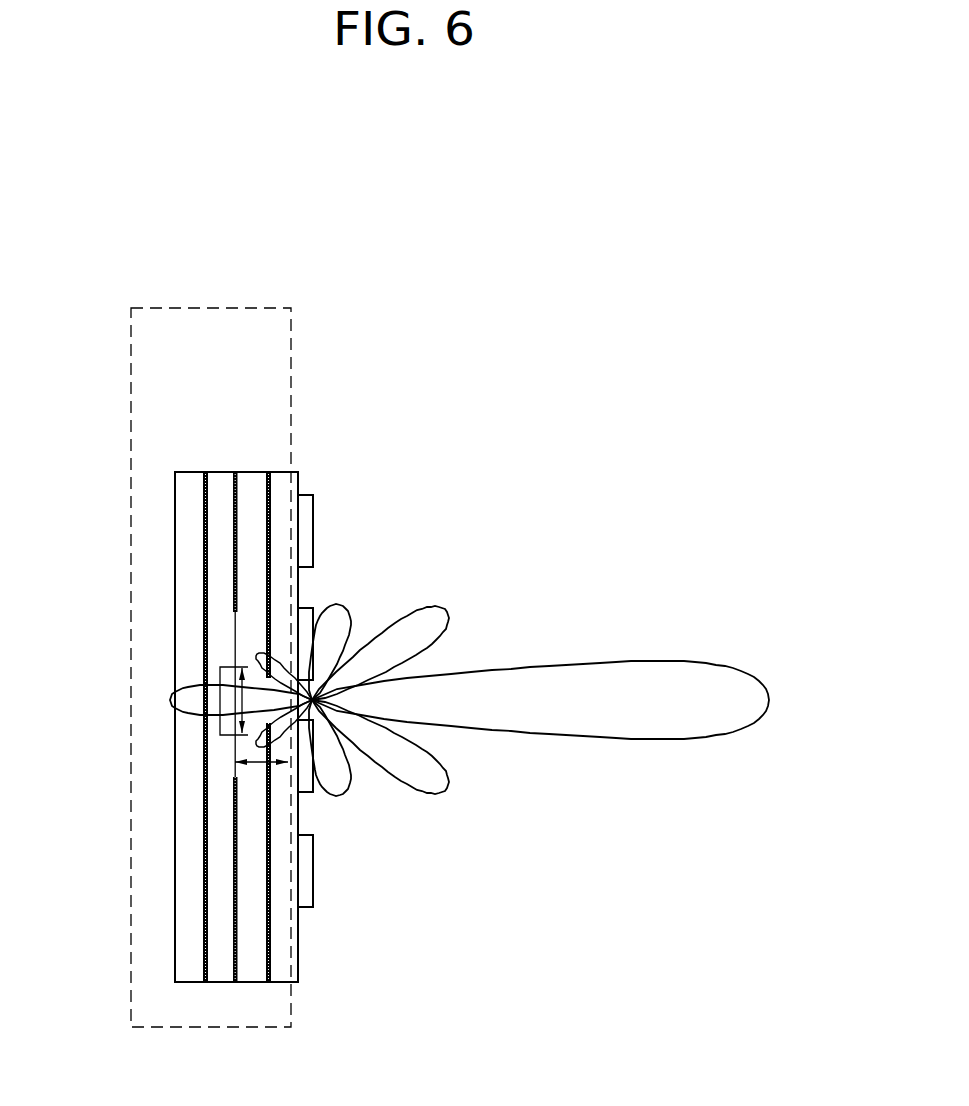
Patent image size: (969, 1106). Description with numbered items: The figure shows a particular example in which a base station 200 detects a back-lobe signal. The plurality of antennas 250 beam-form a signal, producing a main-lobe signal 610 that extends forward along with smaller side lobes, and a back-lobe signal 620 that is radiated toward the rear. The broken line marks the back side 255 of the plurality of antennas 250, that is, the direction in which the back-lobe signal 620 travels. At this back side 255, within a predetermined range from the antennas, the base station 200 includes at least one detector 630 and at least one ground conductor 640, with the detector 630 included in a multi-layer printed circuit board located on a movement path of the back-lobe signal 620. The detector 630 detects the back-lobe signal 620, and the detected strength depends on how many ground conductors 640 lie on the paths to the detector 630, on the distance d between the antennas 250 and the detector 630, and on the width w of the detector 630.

The base station 200 is at (451, 268).
The back side of the plurality of antennas 255 is at (211, 308).
The plurality of antennas 250 is at (298, 484).
The ground conductor 640 is at (270, 472).
The detector 630 is at (220, 667).
The back-lobe signal 620 is at (170, 700).
The main-lobe signal 610 is at (545, 665).